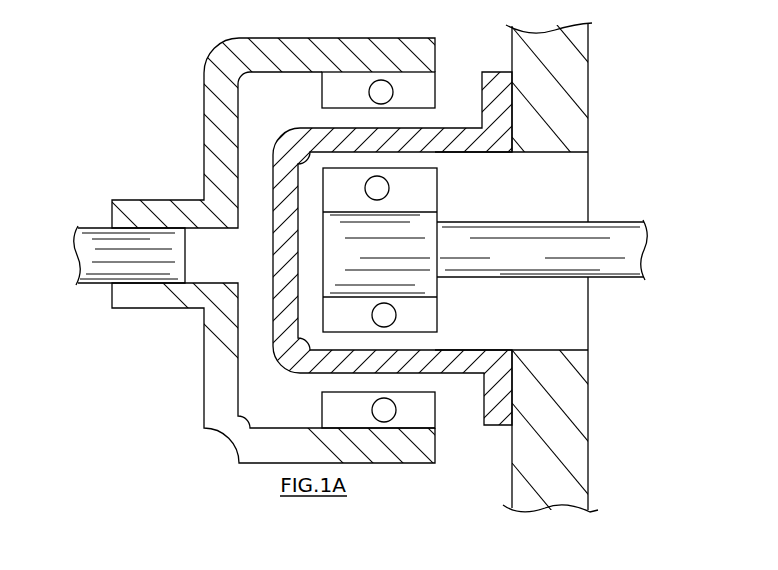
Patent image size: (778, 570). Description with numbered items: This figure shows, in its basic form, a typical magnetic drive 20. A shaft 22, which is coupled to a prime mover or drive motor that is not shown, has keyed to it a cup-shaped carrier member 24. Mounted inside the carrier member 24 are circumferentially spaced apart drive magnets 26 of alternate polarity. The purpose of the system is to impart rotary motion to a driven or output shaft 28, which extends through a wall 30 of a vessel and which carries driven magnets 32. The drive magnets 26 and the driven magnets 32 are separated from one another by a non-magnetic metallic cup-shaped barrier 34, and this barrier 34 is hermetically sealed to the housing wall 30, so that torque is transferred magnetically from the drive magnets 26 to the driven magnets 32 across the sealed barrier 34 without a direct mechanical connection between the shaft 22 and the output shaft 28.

The magnetic drive 20 is at (188, 126).
The shaft 22 is at (112, 260).
The cup-shaped carrier member 24 is at (222, 418).
The drive magnets 26 is at (332, 91).
The driven shaft 28 is at (615, 255).
The wall 30 is at (563, 432).
The driven magnets 32 is at (425, 313).
The cup-shaped barrier 34 is at (298, 358).